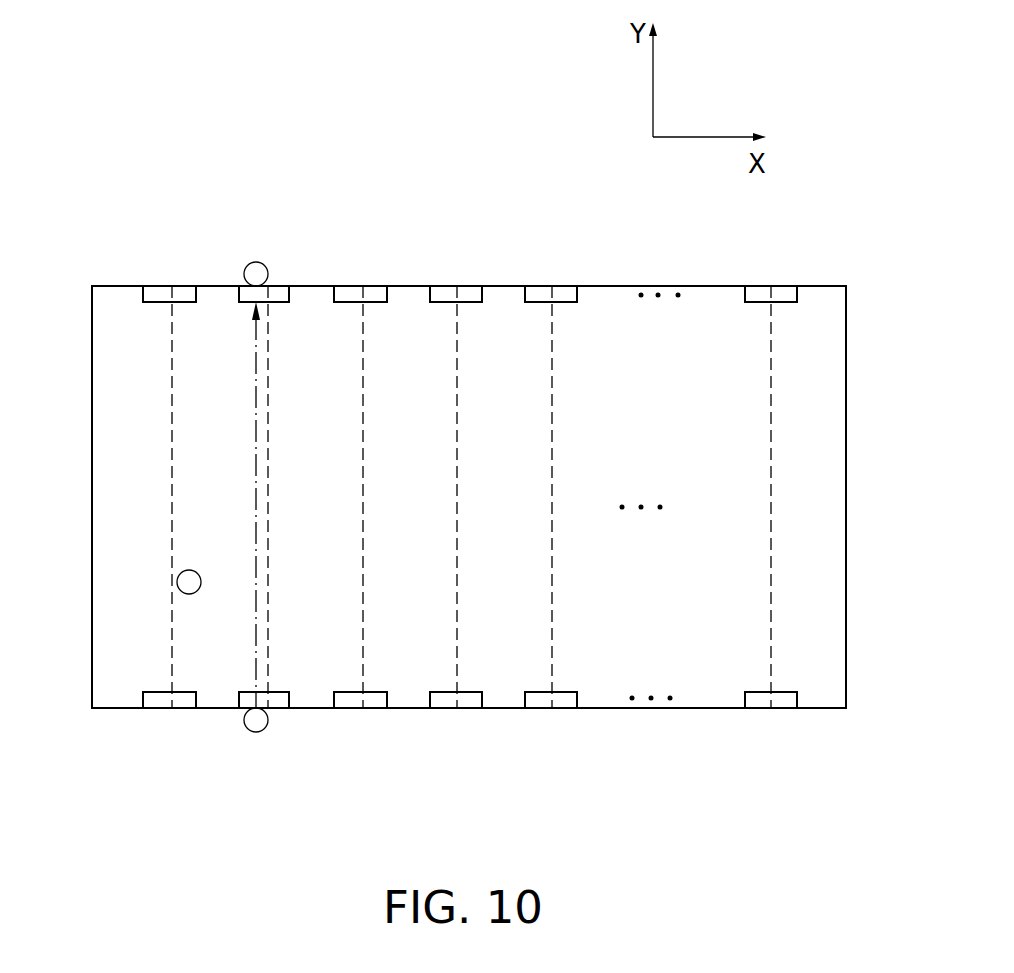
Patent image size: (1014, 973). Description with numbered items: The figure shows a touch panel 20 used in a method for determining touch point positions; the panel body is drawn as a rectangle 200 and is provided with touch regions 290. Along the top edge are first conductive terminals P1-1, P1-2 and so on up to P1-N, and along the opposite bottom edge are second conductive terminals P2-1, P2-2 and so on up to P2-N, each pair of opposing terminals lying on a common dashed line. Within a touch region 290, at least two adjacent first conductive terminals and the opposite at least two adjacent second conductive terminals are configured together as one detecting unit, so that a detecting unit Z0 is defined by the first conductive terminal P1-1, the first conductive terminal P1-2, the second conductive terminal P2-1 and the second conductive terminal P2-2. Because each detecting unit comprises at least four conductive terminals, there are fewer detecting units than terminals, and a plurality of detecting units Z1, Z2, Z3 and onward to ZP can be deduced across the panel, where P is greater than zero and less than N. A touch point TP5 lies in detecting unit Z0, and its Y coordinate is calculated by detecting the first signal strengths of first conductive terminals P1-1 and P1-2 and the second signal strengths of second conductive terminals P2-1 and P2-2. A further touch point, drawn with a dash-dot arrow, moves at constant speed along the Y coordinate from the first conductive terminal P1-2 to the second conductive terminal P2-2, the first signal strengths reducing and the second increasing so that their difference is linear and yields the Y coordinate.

The touch panel 20 is at (446, 128).
The circuit board 200 is at (845, 328).
The touch region 290 is at (780, 584).
The first conductive terminal P1-1 is at (158, 700).
The first conductive terminal P1-2 is at (280, 700).
The first conductive terminal P1-N is at (758, 292).
The second conductive terminal P2-1 is at (152, 293).
The second conductive terminal P2-2 is at (278, 292).
The second conductive terminal P2-N is at (757, 700).
The touch point TP5 is at (194, 593).
The detecting unit Z0 is at (191, 497).
The detecting unit Z1 is at (292, 497).
The detecting unit Z2 is at (385, 497).
The detecting unit Z3 is at (504, 497).
The detecting unit ZP is at (749, 497).